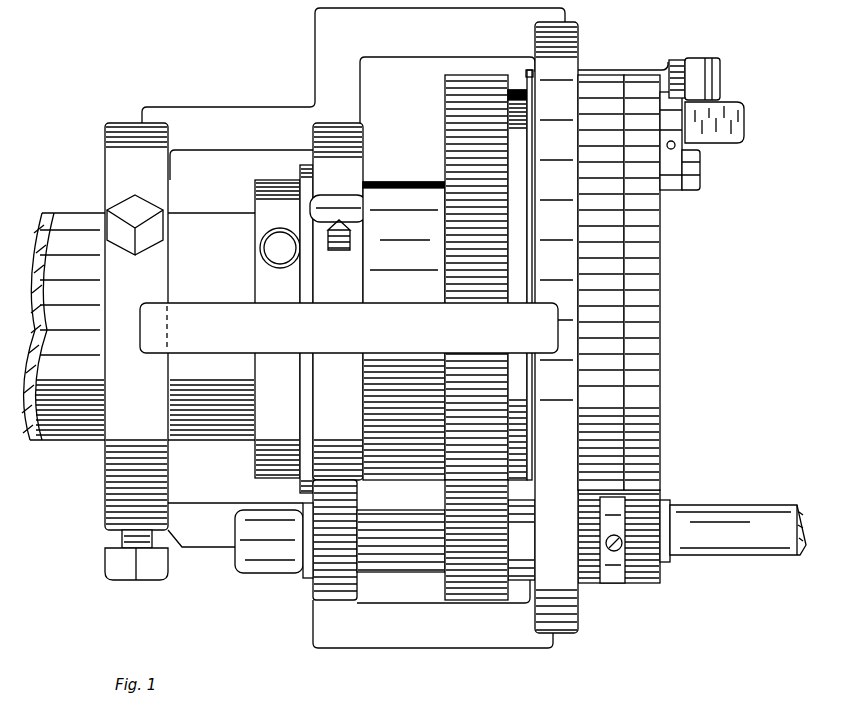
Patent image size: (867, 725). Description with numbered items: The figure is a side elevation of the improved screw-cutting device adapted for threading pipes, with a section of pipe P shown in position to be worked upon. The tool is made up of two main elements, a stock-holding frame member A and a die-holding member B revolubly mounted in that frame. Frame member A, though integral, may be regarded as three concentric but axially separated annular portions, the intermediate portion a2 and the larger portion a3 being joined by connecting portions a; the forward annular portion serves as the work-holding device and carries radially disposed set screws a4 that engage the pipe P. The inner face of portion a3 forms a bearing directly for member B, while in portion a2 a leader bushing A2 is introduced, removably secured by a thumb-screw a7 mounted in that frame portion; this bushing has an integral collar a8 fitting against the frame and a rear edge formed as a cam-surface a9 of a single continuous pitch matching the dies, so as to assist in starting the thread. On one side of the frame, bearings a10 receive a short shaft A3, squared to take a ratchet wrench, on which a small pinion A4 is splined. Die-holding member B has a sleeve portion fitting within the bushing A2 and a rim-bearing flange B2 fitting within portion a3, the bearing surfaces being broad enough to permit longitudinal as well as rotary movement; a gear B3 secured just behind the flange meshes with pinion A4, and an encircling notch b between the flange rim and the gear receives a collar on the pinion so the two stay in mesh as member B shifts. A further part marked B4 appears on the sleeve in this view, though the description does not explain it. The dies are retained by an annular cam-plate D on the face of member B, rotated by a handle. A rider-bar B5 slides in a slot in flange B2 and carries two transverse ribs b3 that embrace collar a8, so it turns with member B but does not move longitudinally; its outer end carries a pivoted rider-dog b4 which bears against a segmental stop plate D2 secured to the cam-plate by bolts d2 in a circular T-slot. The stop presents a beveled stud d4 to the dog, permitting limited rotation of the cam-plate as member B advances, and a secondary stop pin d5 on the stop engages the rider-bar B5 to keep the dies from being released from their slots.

The connecting portions a is at (405, 328).
The annular portion a2 is at (336, 406).
The annular portion a3 is at (556, 327).
The set screws a4 is at (107, 565).
The thumb-screw a7 is at (357, 218).
The collar a8 is at (312, 155).
The cam-surface a9 is at (300, 172).
The bearings a10 is at (620, 615).
The stock-holding frame member A is at (447, 45).
The leader bushing A2 is at (300, 292).
The short shaft A3 is at (390, 573).
The pinion A4 is at (487, 580).
The die-holding member B is at (388, 183).
The rim-bearing flange B2 is at (601, 282).
The gear B3 is at (448, 108).
The pin B4 is at (280, 248).
The rider-bar B5 is at (668, 62).
The encircling notch b is at (520, 95).
The transverse ribs b3 is at (527, 72).
The rider-dog b4 is at (708, 100).
The annular plate D is at (642, 282).
The segmental plate D2 is at (672, 190).
The bolts d2 is at (697, 180).
The stud d4 is at (740, 128).
The secondary stop pin d5 is at (700, 145).
The pipe P is at (95, 442).